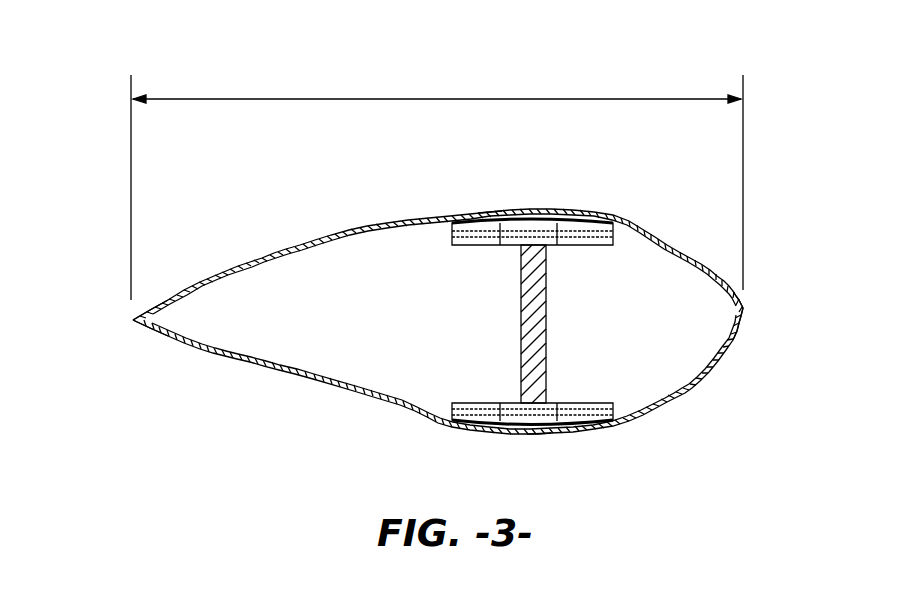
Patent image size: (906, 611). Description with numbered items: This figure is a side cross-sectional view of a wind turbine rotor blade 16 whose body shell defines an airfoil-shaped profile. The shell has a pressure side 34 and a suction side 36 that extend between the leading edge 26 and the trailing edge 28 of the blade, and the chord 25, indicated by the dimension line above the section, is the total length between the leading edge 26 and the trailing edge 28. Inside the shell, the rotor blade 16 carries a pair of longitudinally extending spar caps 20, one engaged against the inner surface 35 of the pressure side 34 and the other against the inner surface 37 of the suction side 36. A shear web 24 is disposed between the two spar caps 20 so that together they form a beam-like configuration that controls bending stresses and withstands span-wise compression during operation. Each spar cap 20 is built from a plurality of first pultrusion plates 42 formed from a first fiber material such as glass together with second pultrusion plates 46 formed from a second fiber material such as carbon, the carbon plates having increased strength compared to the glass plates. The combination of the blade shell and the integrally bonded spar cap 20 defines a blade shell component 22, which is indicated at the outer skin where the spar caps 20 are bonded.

The rotor blade 16 is at (668, 63).
The spar cap 20 is at (572, 218).
The blade shell component 22 is at (489, 204).
The shear web 24 is at (548, 367).
The chord 25 is at (333, 98).
The leading edge 26 is at (745, 312).
The trailing edge 28 is at (130, 321).
The pressure side 34 is at (353, 400).
The inner surface of pressure side 35 is at (278, 362).
The suction side 36 is at (367, 227).
The inner surface of suction side 37 is at (300, 258).
The first pultrusion plates 42 is at (582, 240).
The second pultrusion plates 46 is at (468, 245).